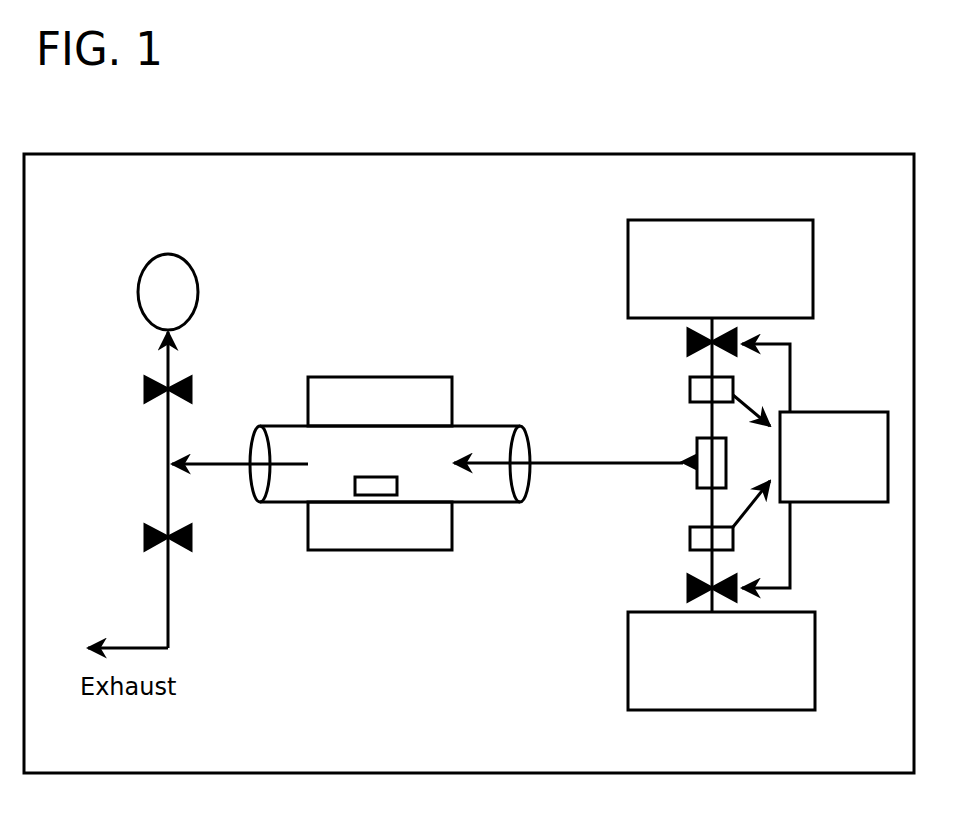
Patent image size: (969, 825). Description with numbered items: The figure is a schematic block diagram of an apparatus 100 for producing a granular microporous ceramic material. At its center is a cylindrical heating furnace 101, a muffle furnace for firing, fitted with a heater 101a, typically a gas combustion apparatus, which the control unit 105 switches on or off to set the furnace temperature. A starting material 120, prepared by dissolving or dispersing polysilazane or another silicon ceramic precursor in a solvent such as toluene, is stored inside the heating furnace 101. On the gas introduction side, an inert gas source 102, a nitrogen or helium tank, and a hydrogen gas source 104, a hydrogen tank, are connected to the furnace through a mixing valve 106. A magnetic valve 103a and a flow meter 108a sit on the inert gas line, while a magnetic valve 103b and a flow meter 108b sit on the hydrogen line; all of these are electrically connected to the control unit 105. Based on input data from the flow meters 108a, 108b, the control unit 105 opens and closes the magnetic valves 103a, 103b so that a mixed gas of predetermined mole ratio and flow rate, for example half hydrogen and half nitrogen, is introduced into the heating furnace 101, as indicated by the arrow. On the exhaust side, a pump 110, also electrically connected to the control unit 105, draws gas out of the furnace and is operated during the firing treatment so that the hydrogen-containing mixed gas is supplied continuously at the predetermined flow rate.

The apparatus 100 is at (901, 193).
The heating furnace 101 is at (468, 426).
The heater 101a is at (392, 377).
The inert gas source 102 is at (813, 285).
The magnetic valve 103a is at (688, 344).
The magnetic valve 103b is at (688, 585).
The hydrogen gas source 104 is at (815, 672).
The control unit 105 is at (864, 412).
The mixing valve 106 is at (697, 450).
The flow meter 108a is at (690, 388).
The flow meter 108b is at (690, 536).
The pump 110 is at (188, 264).
The starting material 120 is at (374, 477).